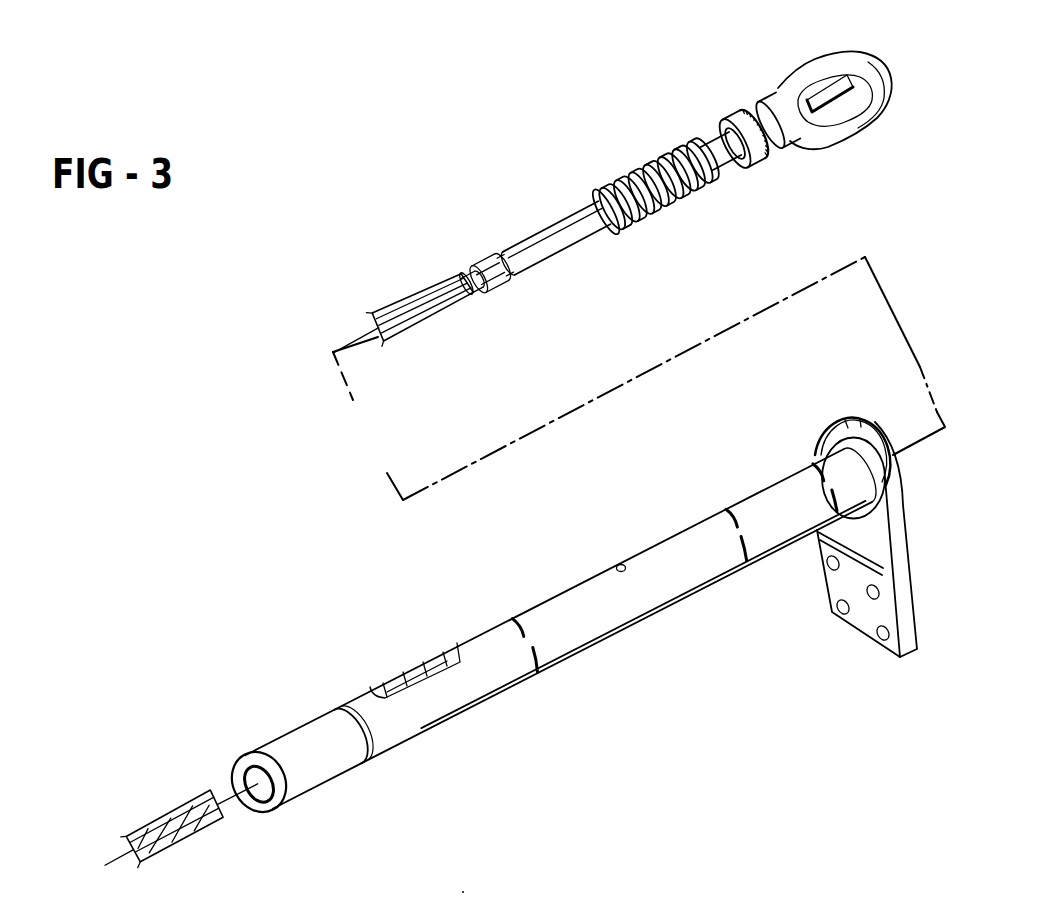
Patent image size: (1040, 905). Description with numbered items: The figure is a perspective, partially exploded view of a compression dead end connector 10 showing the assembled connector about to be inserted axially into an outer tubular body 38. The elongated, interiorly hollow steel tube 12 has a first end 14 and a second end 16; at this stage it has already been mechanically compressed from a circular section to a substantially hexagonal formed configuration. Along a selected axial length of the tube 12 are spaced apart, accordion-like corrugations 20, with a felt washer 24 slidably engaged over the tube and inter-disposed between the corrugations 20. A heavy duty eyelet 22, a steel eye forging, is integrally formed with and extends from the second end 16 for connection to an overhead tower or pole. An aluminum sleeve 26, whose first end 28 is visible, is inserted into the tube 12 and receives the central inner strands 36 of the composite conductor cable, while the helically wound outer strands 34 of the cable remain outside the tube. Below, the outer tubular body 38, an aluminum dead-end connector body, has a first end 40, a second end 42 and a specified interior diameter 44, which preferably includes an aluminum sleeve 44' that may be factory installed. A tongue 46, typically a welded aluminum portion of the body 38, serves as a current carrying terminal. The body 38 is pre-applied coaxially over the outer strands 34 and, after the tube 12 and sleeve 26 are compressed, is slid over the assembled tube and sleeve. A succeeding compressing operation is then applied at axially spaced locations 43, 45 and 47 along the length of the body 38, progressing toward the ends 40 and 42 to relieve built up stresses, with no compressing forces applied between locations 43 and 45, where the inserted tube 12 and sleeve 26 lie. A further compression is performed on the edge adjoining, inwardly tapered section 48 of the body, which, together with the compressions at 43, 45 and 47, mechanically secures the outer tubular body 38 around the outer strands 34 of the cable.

The compression dead end connector 10 is at (334, 297).
The tube 12 is at (565, 245).
The first end 14 is at (480, 258).
The second end 16 is at (760, 113).
The corrugations 20 is at (643, 184).
The heavy duty eyelet 22 is at (837, 60).
The felt washer 24 is at (722, 118).
The aluminum sleeve 26 is at (475, 265).
The first end 28 is at (467, 262).
The outer strands 34 is at (423, 287).
The inner strands 36 is at (474, 288).
The outer tubular body 38 is at (568, 590).
The first end 40 is at (245, 760).
The second end 42 is at (830, 432).
The axial compressing location 43 is at (518, 618).
The interior diameter 44 is at (462, 699).
The slot ribs 44' is at (412, 643).
The axial compressing location 45 is at (735, 510).
The tongue 46 is at (900, 610).
The axial compressing location 47 is at (815, 460).
The inwardly tapered section 48 is at (293, 738).